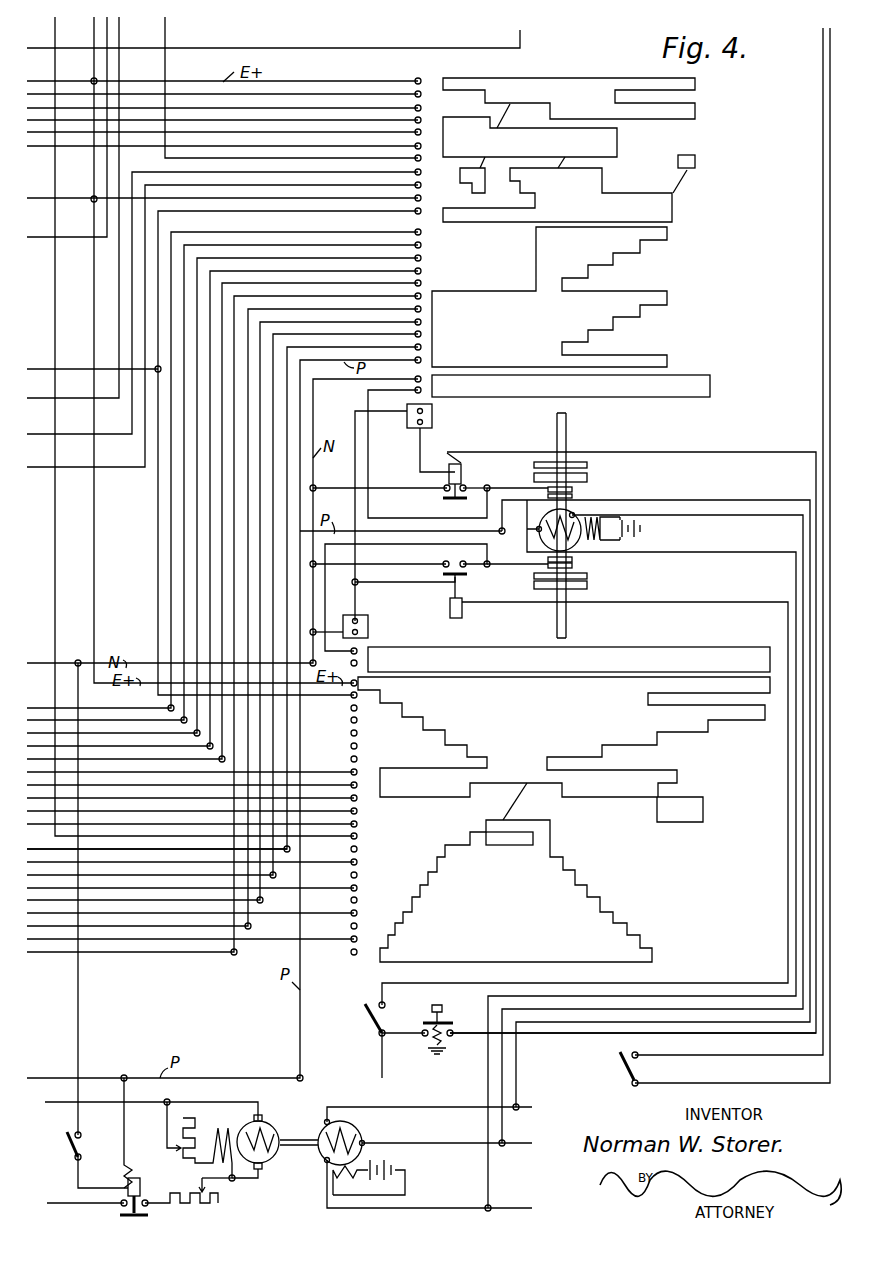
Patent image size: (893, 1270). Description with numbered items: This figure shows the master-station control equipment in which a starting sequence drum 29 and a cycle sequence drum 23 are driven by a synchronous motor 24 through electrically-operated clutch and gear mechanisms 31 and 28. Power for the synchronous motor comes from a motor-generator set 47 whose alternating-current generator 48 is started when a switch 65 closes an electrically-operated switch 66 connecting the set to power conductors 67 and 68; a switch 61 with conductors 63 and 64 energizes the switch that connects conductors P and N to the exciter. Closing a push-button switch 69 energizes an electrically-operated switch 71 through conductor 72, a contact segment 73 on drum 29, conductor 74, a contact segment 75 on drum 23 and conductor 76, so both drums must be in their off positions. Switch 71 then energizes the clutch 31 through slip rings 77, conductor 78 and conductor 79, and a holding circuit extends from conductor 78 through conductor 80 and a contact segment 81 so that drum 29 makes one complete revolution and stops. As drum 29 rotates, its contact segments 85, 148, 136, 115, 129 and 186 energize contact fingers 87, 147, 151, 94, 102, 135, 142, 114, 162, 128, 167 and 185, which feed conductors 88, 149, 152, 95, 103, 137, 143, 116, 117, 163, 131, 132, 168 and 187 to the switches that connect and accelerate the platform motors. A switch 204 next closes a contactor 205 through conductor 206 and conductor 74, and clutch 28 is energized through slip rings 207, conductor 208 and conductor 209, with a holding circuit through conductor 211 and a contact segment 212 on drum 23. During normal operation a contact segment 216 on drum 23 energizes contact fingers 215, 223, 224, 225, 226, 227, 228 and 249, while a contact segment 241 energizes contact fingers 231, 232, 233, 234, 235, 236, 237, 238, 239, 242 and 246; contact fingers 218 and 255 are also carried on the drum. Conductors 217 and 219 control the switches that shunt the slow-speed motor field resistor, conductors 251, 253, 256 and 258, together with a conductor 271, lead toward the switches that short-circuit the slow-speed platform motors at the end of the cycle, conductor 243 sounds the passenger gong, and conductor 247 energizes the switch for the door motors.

The conductor 253 is at (526, 30).
The conductor 258 is at (107, 30).
The conductor 271 is at (119, 75).
The conductor 243 is at (90, 82).
The conductor 187 is at (292, 159).
The conductor 149 is at (52, 98).
The conductor 152 is at (50, 111).
The conductor 88 is at (47, 122).
The conductor 95 is at (47, 134).
The conductor 103 is at (50, 148).
The conductor 137 is at (290, 174).
The conductor 143 is at (292, 186).
The conductor 163 is at (44, 201).
The conductor 116 is at (291, 211).
The conductor 117 is at (88, 369).
The conductor 168 is at (342, 283).
The conductor 131 is at (340, 348).
The conductor 132 is at (170, 852).
The conductor 80 is at (396, 516).
The contact finger 147 is at (414, 96).
The contact finger 151 is at (414, 110).
The contact finger 87 is at (414, 122).
The contact finger 94 is at (414, 134).
The contact finger 102 is at (414, 148).
The contact finger 185 is at (414, 160).
The contact finger 135 is at (414, 174).
The contact finger 142 is at (414, 187).
The contact finger 162 is at (414, 200).
The contact finger 114 is at (414, 213).
The contact finger 167 is at (414, 285).
The contact finger 128 is at (414, 349).
The contact segment 148 is at (545, 78).
The contact segment 85 is at (617, 142).
The contact segment 136 is at (478, 193).
The contact segment 115 is at (603, 183).
The contact segment 186 is at (695, 162).
The starting sequence drum 29 is at (735, 140).
The contact segment 129 is at (482, 290).
The contact segment 81 is at (514, 400).
The contact segment 73 is at (432, 416).
The conductor 74 is at (352, 480).
The conductor 79 is at (384, 492).
The electrically-operated switch 71 is at (465, 472).
The conductor 78 is at (502, 490).
The conductor 72 is at (676, 453).
The clutch and gear mechanism 31 is at (587, 476).
The slip rings 77 is at (572, 492).
The synchronous motor 24 is at (540, 540).
The conductor 211 is at (430, 548).
The conductor 209 is at (414, 570).
The conductor 208 is at (514, 572).
The contactor 205 is at (449, 606).
The slip rings 207 is at (572, 566).
The clutch and gear mechanism 28 is at (587, 586).
The conductor 206 is at (678, 606).
The conductor 76 is at (330, 620).
The contact segment 75 is at (368, 622).
The contact segment 212 is at (462, 646).
The conductor 64 is at (820, 324).
The conductor 63 is at (827, 380).
The switch 61 is at (618, 1068).
The sequence control drum 23 is at (564, 749).
The contact segment 216 is at (460, 800).
The contact segment 241 is at (578, 880).
The contact finger 223 is at (351, 697).
The contact finger 224 is at (351, 710).
The contact finger 225 is at (351, 722).
The contact finger 226 is at (351, 735).
The contact finger 227 is at (351, 748).
The contact finger 228 is at (351, 761).
The contact finger 215 is at (351, 774).
The contact finger 218 is at (351, 787).
The contact finger 249 is at (351, 800).
The contact finger 255 is at (351, 813).
The contact finger 246 is at (351, 826).
The contact finger 242 is at (351, 838).
The contact finger 239 is at (351, 851).
The contact finger 238 is at (351, 864).
The contact finger 237 is at (351, 877).
The contact finger 236 is at (351, 890).
The contact finger 235 is at (351, 902).
The contact finger 234 is at (351, 915).
The contact finger 233 is at (351, 928).
The contact finger 232 is at (351, 941).
The contact finger 231 is at (351, 954).
The conductor 217 is at (52, 774).
The conductor 219 is at (52, 787).
The conductor 251 is at (52, 800).
The conductor 256 is at (52, 813).
The conductor 247 is at (52, 826).
The switch 204 is at (356, 1016).
The push-button switch 69 is at (453, 1020).
The power conductor 68 is at (62, 1104).
The switch 65 is at (66, 1150).
The electrically-operated switch 66 is at (113, 1146).
The power conductor 67 is at (56, 1188).
The motor-generator set 47 is at (270, 1117).
The alternating-current generator 48 is at (320, 1158).